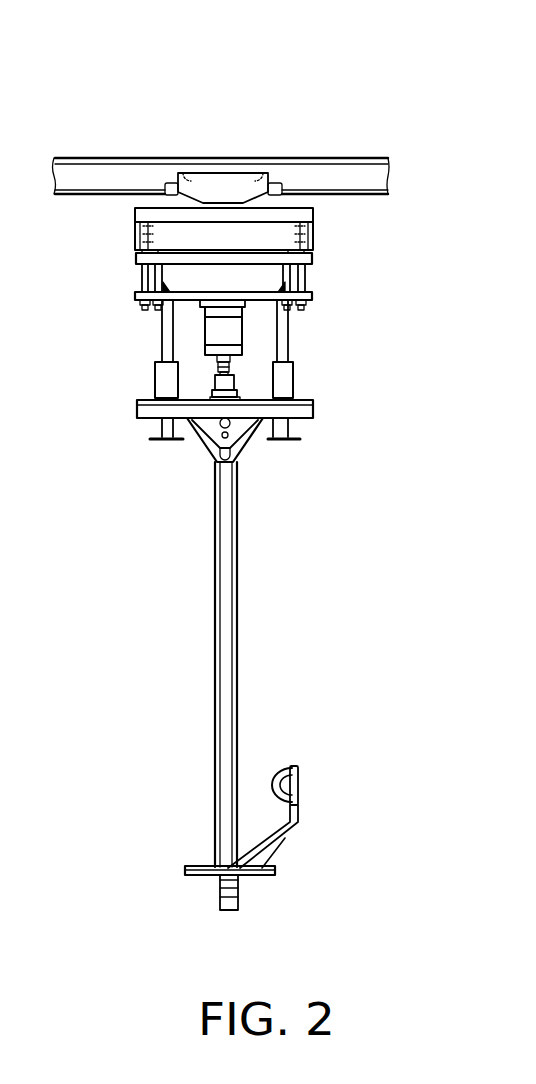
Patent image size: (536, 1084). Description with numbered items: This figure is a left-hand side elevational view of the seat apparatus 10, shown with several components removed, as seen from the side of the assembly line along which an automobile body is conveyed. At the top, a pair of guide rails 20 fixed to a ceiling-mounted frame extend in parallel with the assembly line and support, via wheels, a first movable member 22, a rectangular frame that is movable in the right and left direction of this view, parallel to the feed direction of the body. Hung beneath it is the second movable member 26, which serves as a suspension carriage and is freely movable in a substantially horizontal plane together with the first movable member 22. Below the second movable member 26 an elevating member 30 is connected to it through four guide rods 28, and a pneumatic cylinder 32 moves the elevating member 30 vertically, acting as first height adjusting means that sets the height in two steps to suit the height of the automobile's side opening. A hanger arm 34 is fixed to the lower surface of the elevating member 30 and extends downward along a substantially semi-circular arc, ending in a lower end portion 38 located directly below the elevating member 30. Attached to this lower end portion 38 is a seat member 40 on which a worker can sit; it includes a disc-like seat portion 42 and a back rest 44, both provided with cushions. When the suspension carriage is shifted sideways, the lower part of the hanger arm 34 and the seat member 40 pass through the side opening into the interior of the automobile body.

The seat apparatus 10 is at (407, 106).
The guide rails 20 is at (77, 178).
The first movable member 22 is at (300, 214).
The second movable member 26 is at (145, 257).
The guide rods 28 is at (165, 337).
The elevating member 30 is at (150, 400).
The pneumatic cylinder 32 is at (228, 330).
The hanger arm 34 is at (228, 594).
The lower end portion 38 is at (240, 903).
The seat member 40 is at (330, 810).
The seat portion 42 is at (205, 866).
The back rest 44 is at (285, 768).